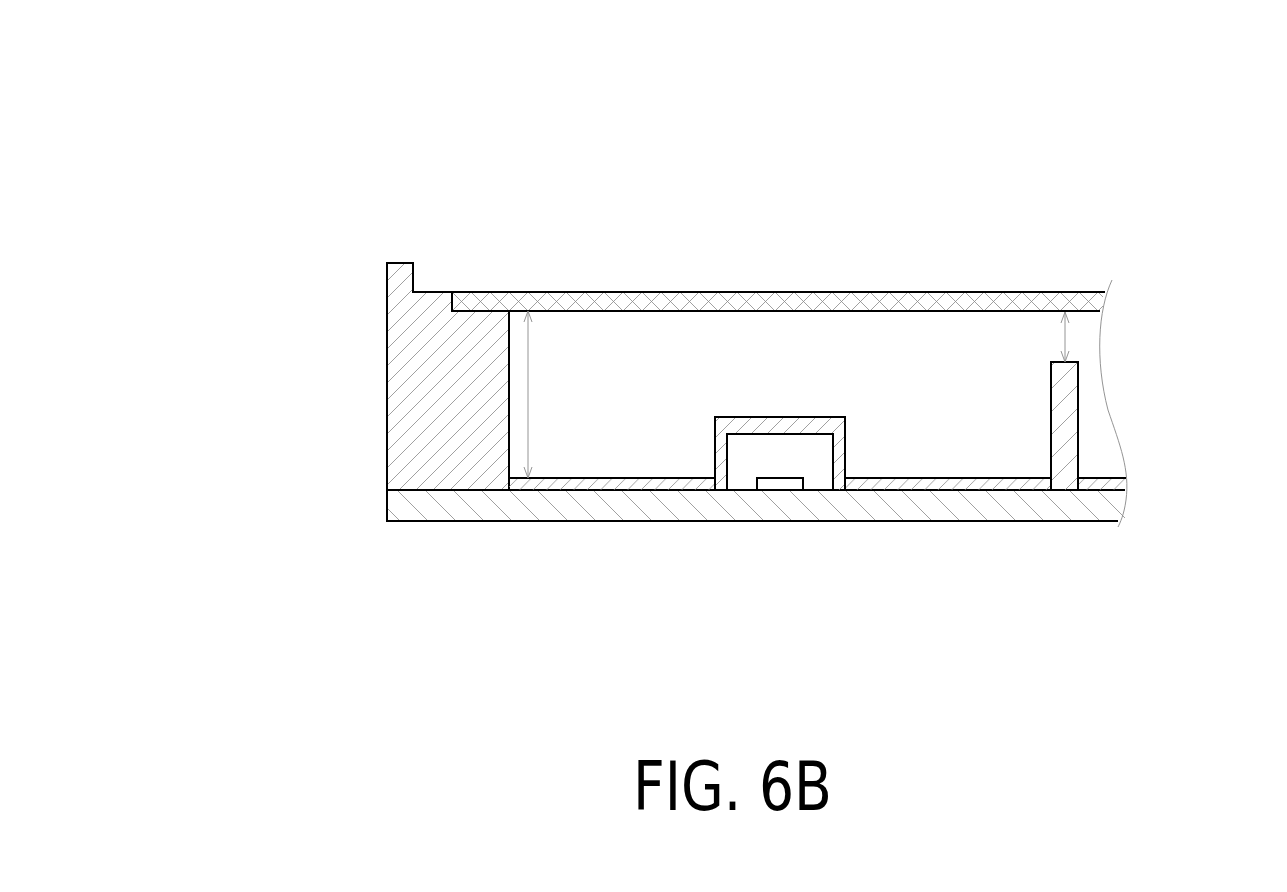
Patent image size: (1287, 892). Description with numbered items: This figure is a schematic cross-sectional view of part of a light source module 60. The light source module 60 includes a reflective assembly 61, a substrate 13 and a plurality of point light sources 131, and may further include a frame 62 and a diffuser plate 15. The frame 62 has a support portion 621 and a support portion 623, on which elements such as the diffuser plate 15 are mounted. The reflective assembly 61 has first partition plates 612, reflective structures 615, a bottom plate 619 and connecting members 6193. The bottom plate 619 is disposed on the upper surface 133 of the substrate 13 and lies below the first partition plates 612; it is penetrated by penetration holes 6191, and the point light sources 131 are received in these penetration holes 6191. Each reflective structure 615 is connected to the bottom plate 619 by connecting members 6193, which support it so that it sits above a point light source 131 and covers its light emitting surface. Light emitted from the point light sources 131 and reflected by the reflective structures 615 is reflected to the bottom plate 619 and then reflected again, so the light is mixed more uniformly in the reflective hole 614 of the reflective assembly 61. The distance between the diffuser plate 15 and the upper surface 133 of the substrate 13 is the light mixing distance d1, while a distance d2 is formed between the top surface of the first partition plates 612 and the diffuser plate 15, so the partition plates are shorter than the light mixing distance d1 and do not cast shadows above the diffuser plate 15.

The light source module 60 is at (255, 96).
The reflective assembly 61 is at (610, 477).
The frame 62 is at (413, 373).
The support portion 621 is at (480, 307).
The support portion 623 is at (433, 291).
The diffuser plate 15 is at (643, 298).
The reflective structure 615 is at (770, 420).
The first partition plate 612 is at (1067, 395).
The reflective hole 614 is at (1015, 467).
The bottom plate 619 is at (568, 490).
The penetration hole 6191 is at (745, 498).
The connecting member 6193 is at (715, 453).
The substrate 13 is at (1100, 505).
The point light source 131 is at (777, 490).
The upper surface 133 is at (960, 475).
The light mixing distance d1 is at (521, 478).
The distance d2 is at (1063, 338).